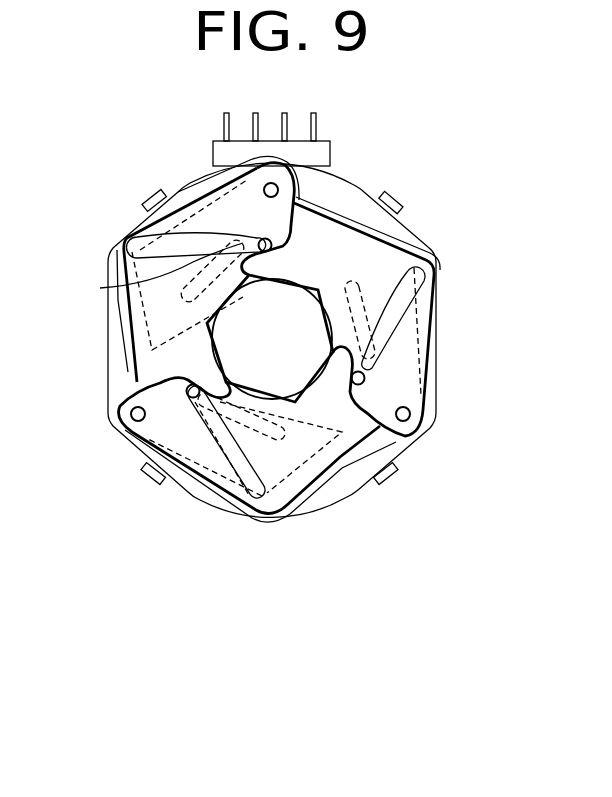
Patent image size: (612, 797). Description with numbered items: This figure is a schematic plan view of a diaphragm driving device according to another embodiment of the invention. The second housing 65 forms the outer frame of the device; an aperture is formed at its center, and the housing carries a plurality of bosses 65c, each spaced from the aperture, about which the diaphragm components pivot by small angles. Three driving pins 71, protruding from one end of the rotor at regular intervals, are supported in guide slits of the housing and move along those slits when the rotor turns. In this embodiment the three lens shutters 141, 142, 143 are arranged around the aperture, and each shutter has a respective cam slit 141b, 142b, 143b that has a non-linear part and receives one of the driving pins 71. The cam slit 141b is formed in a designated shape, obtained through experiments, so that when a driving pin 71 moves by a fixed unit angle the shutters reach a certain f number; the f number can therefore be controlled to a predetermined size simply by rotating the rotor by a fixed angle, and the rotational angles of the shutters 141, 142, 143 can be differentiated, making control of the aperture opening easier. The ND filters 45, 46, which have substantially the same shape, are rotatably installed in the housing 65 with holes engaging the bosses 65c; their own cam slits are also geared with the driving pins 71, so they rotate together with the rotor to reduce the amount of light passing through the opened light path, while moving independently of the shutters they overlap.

The second housing 65 is at (356, 185).
The boss 65c is at (338, 162).
The shutter 141 is at (111, 262).
The cam slit 141b is at (147, 215).
The shutter 142 is at (403, 237).
The cam slit 142b is at (400, 298).
The shutter 143 is at (327, 462).
The cam slit 143b is at (235, 450).
The driving pin 71 is at (130, 290).
The ND filter 45 is at (130, 347).
The ND filter 46 is at (228, 510).